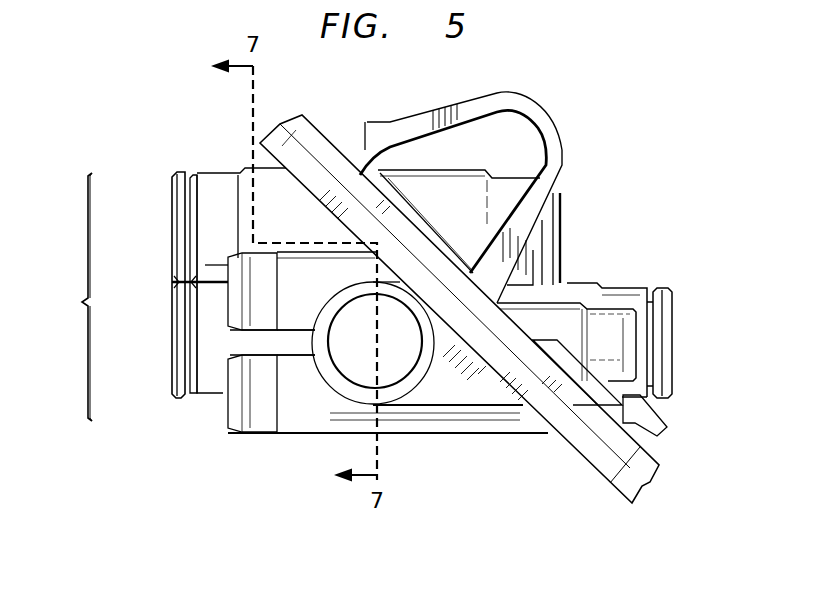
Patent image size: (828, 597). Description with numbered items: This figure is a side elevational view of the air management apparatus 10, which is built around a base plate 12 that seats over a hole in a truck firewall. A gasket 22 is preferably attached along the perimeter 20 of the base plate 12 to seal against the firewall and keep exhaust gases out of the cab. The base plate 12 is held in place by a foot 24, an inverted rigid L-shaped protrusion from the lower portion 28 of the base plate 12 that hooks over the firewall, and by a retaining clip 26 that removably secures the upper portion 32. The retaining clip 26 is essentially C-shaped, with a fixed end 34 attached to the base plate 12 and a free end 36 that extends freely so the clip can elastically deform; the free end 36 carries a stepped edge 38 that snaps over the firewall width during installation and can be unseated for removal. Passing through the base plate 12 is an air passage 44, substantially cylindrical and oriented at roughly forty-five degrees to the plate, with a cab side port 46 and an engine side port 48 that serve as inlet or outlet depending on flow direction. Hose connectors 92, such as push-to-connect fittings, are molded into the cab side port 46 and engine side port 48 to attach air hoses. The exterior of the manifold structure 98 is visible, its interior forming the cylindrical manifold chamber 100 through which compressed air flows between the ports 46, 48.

The air management apparatus 10 is at (628, 150).
The base plate 12 is at (574, 452).
The perimeter of base plate 20 is at (300, 134).
The gasket 22 is at (322, 122).
The foot 24 is at (668, 412).
The retaining clip 26 is at (530, 110).
The lower portion of base plate 28 is at (616, 492).
The upper portion of base plate 32 is at (296, 179).
The fixed end 34 is at (470, 256).
The free end 36 is at (402, 122).
The stepped edge 38 is at (366, 140).
The air passage 44 is at (69, 297).
The cab side port 46 is at (214, 398).
The engine side port 48 is at (629, 286).
The hose connector 92 is at (174, 227).
The manifold structure 98 is at (478, 395).
The manifold chamber 100 is at (388, 410).